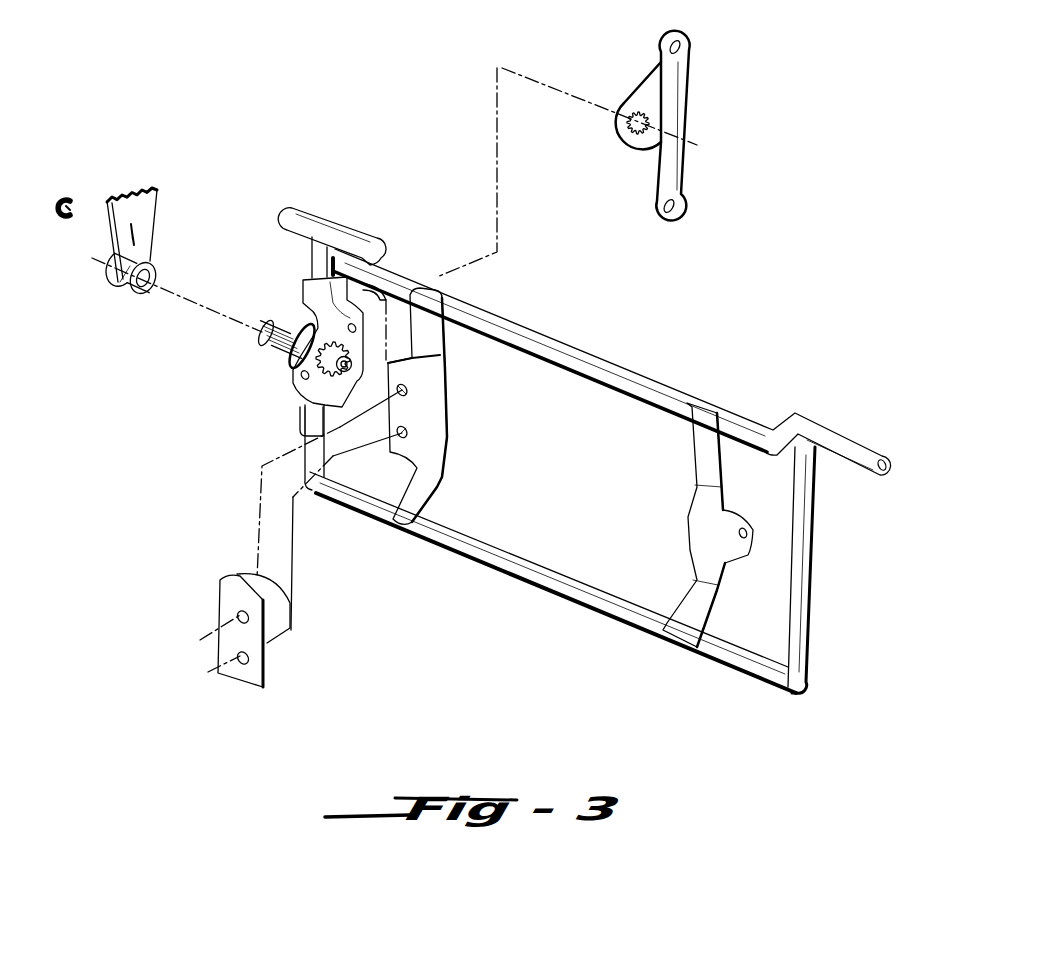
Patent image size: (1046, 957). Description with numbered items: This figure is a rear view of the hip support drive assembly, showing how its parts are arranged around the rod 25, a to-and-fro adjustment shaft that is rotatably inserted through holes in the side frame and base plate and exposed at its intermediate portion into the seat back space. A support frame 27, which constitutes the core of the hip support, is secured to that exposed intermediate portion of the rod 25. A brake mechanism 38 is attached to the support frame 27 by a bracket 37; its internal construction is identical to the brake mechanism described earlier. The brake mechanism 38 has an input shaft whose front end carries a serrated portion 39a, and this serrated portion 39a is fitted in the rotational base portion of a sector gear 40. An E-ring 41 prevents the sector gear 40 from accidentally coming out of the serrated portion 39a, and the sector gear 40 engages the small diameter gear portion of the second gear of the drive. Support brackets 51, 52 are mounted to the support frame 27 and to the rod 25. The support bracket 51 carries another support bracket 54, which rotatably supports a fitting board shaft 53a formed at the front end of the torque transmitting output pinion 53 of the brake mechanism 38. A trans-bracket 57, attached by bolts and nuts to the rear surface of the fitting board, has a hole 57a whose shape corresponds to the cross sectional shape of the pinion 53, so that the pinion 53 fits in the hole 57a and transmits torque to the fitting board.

The rod 25 is at (820, 428).
The support frame 27 is at (540, 582).
The bracket 37 is at (303, 280).
The brake mechanism 38 is at (297, 362).
The serrated portion 39a is at (268, 350).
The sector gear 40 is at (155, 192).
The E-ring 41 is at (68, 197).
The support bracket 51 is at (398, 517).
The support bracket 52 is at (692, 638).
The torque transmitting output pinion 53 is at (317, 302).
The fitting board shaft 53a is at (380, 292).
The support bracket 54 is at (258, 672).
The trans-bracket 57 is at (668, 98).
The hole 57a is at (628, 148).